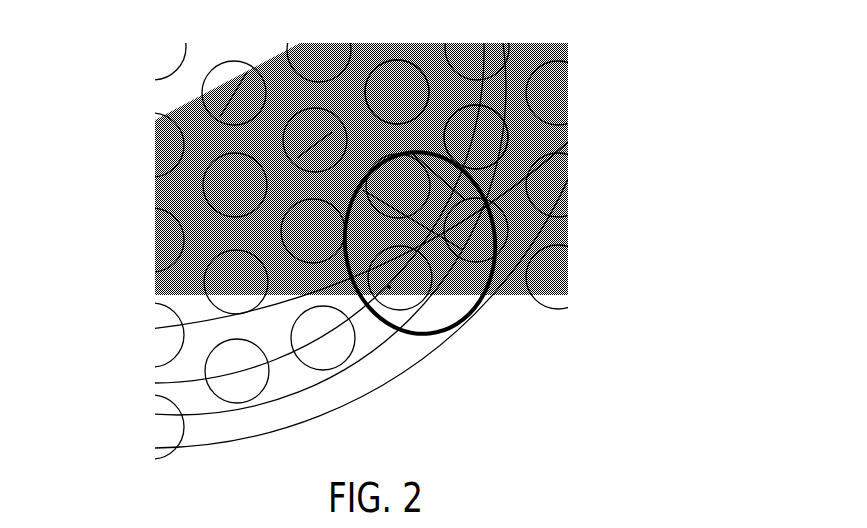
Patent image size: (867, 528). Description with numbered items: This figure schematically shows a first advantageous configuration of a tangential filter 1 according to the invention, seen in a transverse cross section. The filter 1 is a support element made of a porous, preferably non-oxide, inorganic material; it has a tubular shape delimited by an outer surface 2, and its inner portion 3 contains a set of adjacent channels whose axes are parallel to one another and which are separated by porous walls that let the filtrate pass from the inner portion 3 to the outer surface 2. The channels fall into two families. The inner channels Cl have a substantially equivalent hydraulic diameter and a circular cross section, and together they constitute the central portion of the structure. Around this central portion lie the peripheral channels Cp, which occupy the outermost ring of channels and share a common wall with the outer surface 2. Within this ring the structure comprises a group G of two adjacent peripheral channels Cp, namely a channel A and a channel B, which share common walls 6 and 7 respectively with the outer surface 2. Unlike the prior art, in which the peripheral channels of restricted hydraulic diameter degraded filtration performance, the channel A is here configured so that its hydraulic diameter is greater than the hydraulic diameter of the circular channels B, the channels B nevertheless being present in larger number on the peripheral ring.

The tangential filter 1 is at (137, 106).
The outer surface 2 is at (322, 408).
The inner portion 3 is at (341, 191).
The common wall 6 is at (428, 311).
The common wall 7 is at (474, 232).
The peripheral channel A is at (460, 208).
The peripheral channel B is at (393, 298).
The group of two adjacent peripheral channels G is at (429, 249).
The inner channels Cl is at (430, 89).
The peripheral channels Cp is at (515, 129).